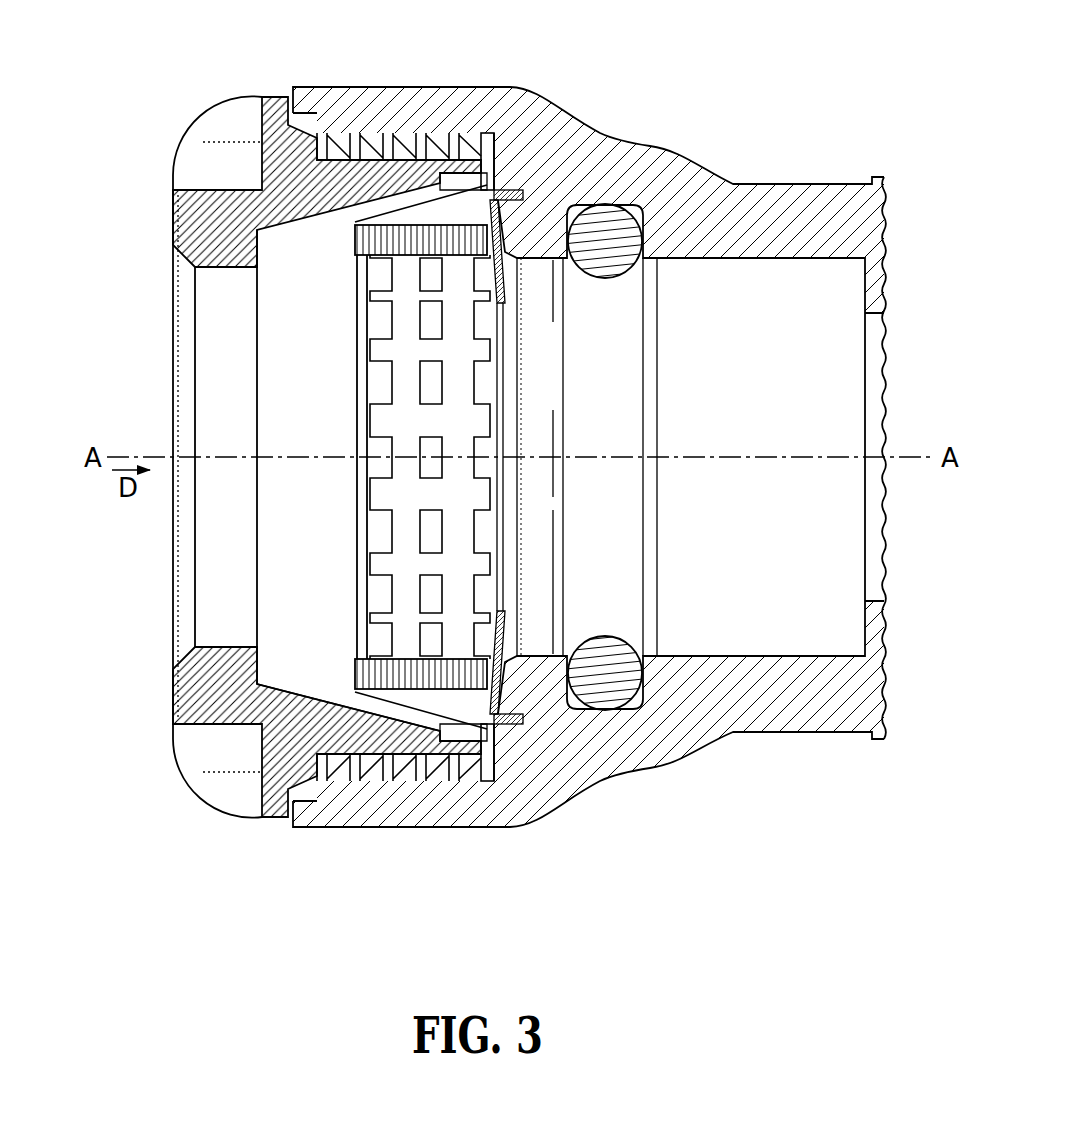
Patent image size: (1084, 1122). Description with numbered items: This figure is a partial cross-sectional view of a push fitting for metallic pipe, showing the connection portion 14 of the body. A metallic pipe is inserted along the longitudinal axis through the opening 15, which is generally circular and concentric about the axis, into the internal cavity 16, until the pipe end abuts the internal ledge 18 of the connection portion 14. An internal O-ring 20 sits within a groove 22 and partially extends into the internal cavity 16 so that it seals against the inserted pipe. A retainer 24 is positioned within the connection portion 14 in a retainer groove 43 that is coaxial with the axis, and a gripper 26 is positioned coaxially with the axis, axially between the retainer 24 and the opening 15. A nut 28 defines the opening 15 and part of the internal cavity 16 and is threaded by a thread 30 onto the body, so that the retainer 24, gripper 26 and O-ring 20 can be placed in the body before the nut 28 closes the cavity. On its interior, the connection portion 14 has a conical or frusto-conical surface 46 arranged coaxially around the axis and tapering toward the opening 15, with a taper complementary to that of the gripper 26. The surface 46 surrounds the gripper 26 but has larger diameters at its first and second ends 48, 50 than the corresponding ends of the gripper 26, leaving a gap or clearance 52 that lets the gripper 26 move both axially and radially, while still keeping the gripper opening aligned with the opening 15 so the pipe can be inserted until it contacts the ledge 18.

The connection portion 14 is at (128, 263).
The opening 15 is at (128, 646).
The internal cavity 16 is at (772, 288).
The internal ledge 18 is at (868, 284).
The internal O-ring 20 is at (613, 237).
The groove 22 is at (637, 706).
The retainer 24 is at (440, 192).
The gripper 26 is at (416, 237).
The nut 28 is at (186, 217).
The thread 30 is at (462, 147).
The retainer groove 43 is at (528, 195).
The conical or frusto-conical surface 46 is at (270, 686).
The first end of surface 48 is at (257, 343).
The second end of surface 50 is at (467, 758).
The gap or clearance 52 is at (378, 712).